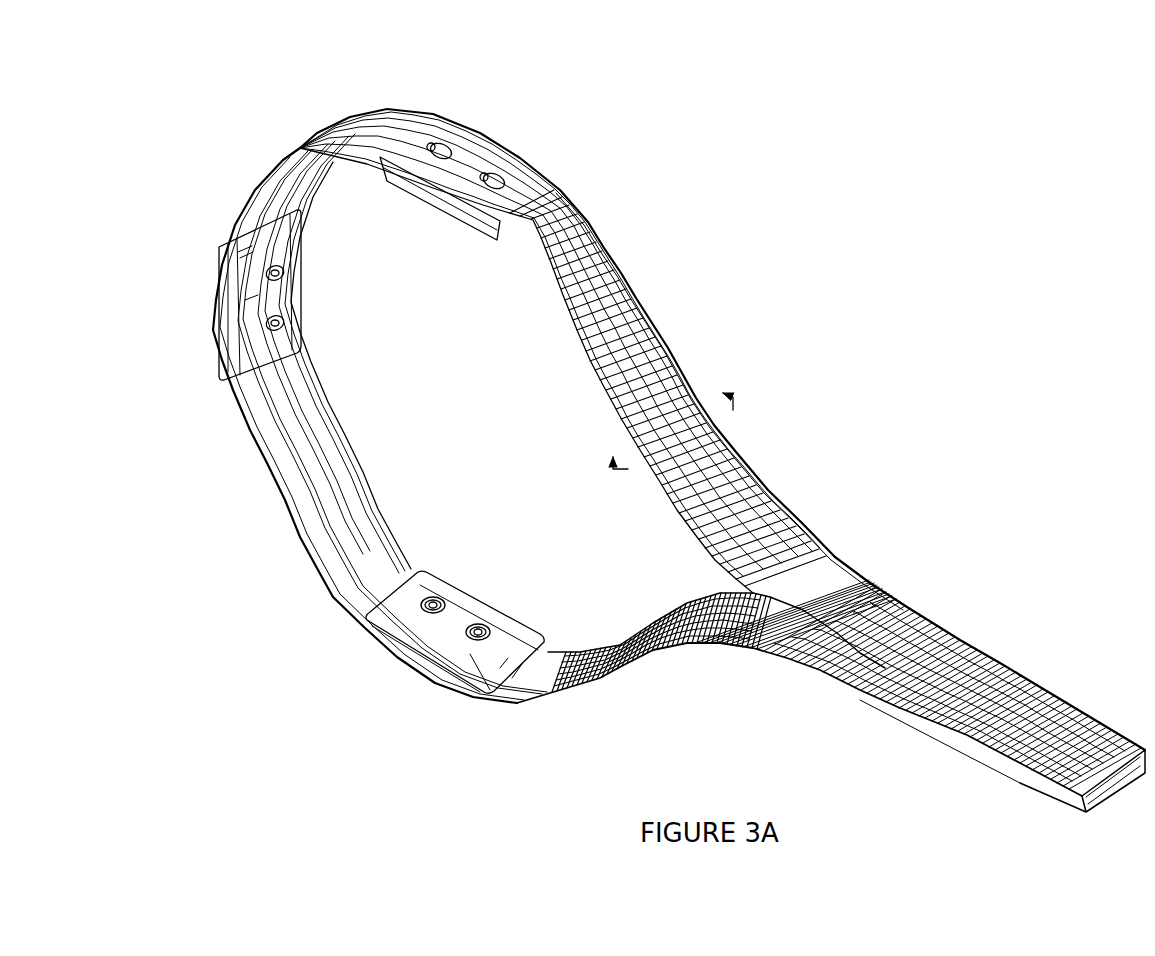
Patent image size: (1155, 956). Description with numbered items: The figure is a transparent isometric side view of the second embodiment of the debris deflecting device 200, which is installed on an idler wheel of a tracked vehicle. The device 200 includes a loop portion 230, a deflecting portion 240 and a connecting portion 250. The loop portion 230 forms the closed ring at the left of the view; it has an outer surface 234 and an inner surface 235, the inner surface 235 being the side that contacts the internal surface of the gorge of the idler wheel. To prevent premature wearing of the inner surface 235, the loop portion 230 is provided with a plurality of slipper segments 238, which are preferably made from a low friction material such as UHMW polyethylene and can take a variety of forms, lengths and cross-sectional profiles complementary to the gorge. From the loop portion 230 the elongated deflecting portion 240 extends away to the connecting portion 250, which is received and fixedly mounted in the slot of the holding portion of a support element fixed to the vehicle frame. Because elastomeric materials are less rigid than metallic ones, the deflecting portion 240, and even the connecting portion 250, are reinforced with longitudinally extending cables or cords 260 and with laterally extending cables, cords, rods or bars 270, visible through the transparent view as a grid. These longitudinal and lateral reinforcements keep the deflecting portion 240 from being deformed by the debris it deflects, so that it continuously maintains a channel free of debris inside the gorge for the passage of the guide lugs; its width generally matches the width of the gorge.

The debris deflecting device 200 is at (683, 438).
The loop portion 230 is at (318, 103).
The outer surface 234 is at (522, 235).
The inner surface 235 is at (340, 567).
The slipper segments 238 is at (458, 683).
The deflecting portion 240 is at (593, 193).
The connecting portion 250 is at (1153, 740).
The longitudinally extending cables or cords 260 is at (358, 512).
The laterally extending cables, cords, rods or bars 270 is at (585, 352).